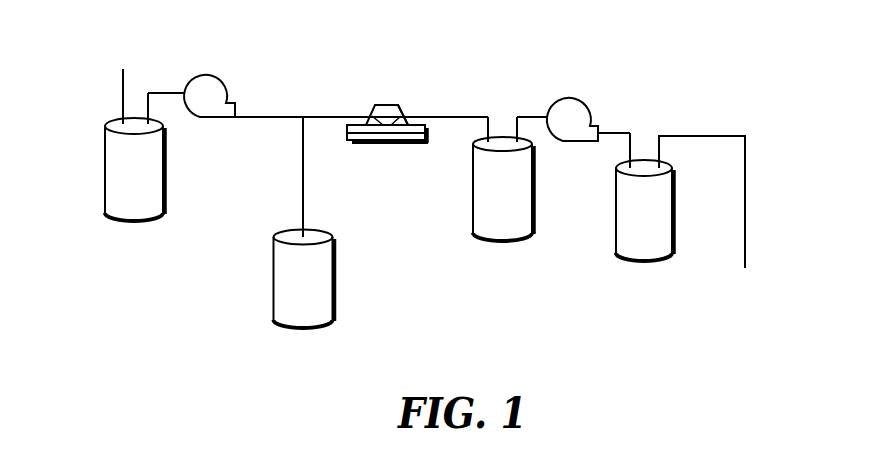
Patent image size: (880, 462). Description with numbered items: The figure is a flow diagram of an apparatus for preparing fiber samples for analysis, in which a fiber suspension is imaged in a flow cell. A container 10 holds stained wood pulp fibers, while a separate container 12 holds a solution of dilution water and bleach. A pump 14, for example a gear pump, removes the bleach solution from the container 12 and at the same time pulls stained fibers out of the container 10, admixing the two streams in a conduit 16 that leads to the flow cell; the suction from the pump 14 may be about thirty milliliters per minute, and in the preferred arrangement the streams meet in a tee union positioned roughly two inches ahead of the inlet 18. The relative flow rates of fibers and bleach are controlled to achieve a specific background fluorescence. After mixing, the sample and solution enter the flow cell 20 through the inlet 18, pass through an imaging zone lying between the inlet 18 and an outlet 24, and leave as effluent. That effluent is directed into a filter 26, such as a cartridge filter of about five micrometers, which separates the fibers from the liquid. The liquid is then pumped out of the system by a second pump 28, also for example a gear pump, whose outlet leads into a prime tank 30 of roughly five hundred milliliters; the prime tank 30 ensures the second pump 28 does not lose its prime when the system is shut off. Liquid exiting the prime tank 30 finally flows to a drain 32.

The container 10 is at (335, 289).
The container 12 is at (103, 166).
The pump 14 is at (229, 90).
The conduit 16 is at (322, 115).
The inlet 18 is at (372, 114).
The flow cell 20 is at (383, 142).
The outlet 24 is at (400, 115).
The filter 26 is at (470, 204).
The second pump 28 is at (590, 112).
The prime tank 30 is at (678, 218).
The drain 32 is at (718, 229).